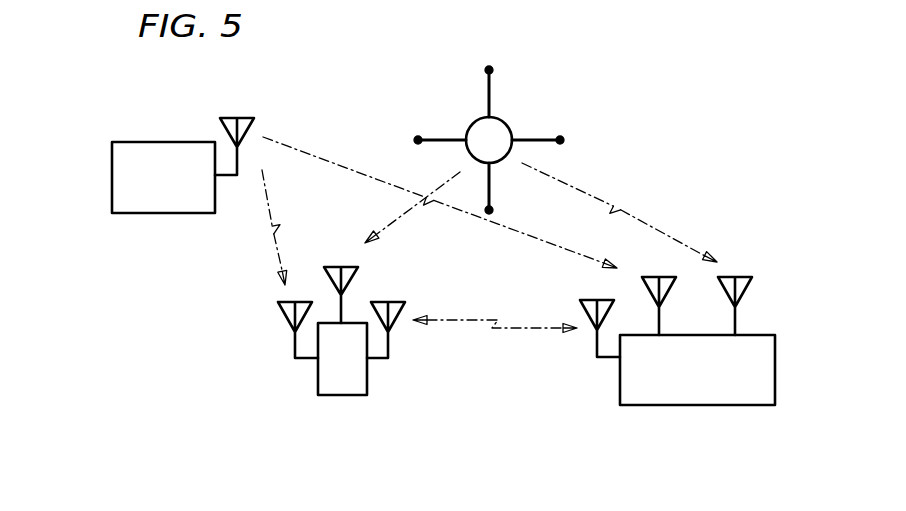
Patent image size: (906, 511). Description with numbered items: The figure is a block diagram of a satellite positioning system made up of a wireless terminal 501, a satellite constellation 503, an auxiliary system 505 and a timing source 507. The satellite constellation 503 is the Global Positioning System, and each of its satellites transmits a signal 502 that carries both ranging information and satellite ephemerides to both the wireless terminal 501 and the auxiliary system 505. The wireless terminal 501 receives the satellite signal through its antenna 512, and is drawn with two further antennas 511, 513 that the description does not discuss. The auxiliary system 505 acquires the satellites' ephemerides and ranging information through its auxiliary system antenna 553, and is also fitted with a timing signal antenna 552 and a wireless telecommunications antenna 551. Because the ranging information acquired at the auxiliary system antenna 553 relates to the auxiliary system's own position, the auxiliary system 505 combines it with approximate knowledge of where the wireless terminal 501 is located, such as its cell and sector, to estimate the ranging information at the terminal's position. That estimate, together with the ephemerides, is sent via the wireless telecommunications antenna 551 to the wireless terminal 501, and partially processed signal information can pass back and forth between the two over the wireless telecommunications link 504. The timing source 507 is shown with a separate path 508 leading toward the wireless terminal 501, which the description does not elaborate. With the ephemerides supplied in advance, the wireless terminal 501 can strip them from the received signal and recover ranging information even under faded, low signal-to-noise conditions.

The wireless terminal 501 is at (318, 380).
The signal 502 is at (393, 219).
The satellite constellation 503 is at (468, 124).
The wireless telecommunications link 504 is at (523, 330).
The auxiliary system 505 is at (775, 358).
The timing source 507 is at (112, 183).
The timing signal 508 is at (270, 238).
The base station antenna 511 is at (280, 310).
The antenna 512 is at (345, 267).
The base station antenna 513 is at (398, 302).
The wireless telecommunications antenna 551 is at (590, 300).
The timing signal antenna 552 is at (662, 277).
The auxiliary system antenna 553 is at (738, 277).